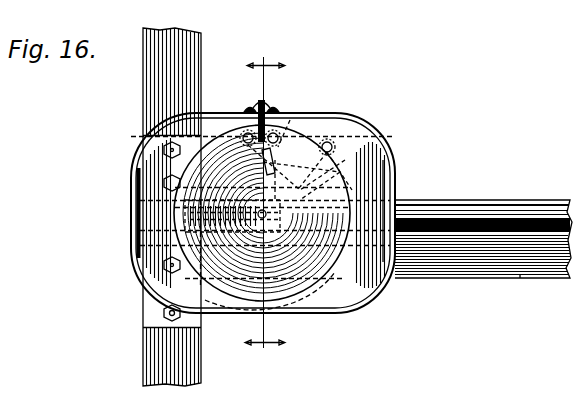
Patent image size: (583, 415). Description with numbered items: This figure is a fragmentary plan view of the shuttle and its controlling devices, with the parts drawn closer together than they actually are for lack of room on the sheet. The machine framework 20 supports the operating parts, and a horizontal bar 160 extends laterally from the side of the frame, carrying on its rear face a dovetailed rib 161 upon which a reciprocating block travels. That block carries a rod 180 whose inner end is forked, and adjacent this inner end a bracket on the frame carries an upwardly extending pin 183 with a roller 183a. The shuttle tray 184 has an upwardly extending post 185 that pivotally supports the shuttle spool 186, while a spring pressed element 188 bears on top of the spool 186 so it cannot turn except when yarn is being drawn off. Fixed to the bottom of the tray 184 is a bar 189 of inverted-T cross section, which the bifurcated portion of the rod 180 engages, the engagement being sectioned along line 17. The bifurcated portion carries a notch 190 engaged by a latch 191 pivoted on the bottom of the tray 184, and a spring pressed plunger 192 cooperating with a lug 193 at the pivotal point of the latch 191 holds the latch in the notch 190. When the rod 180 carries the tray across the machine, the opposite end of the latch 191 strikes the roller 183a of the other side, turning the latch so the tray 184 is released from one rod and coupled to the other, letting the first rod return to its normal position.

The section line 17 is at (265, 203).
The framework 20 is at (143, 116).
The horizontal bar 160 is at (520, 268).
The dovetailed rib 161 is at (471, 238).
The rod 180 is at (435, 207).
The pin 183 is at (343, 130).
The roller 183a is at (345, 112).
The shuttle tray 184 is at (350, 300).
The post 185 is at (261, 218).
The shuttle spool 186 is at (263, 221).
The spring pressed element 188 is at (265, 98).
The bar 189 is at (392, 161).
The notch 190 is at (377, 129).
The latch 191 is at (164, 149).
The spring pressed plunger 192 is at (248, 110).
The lug 193 is at (287, 99).